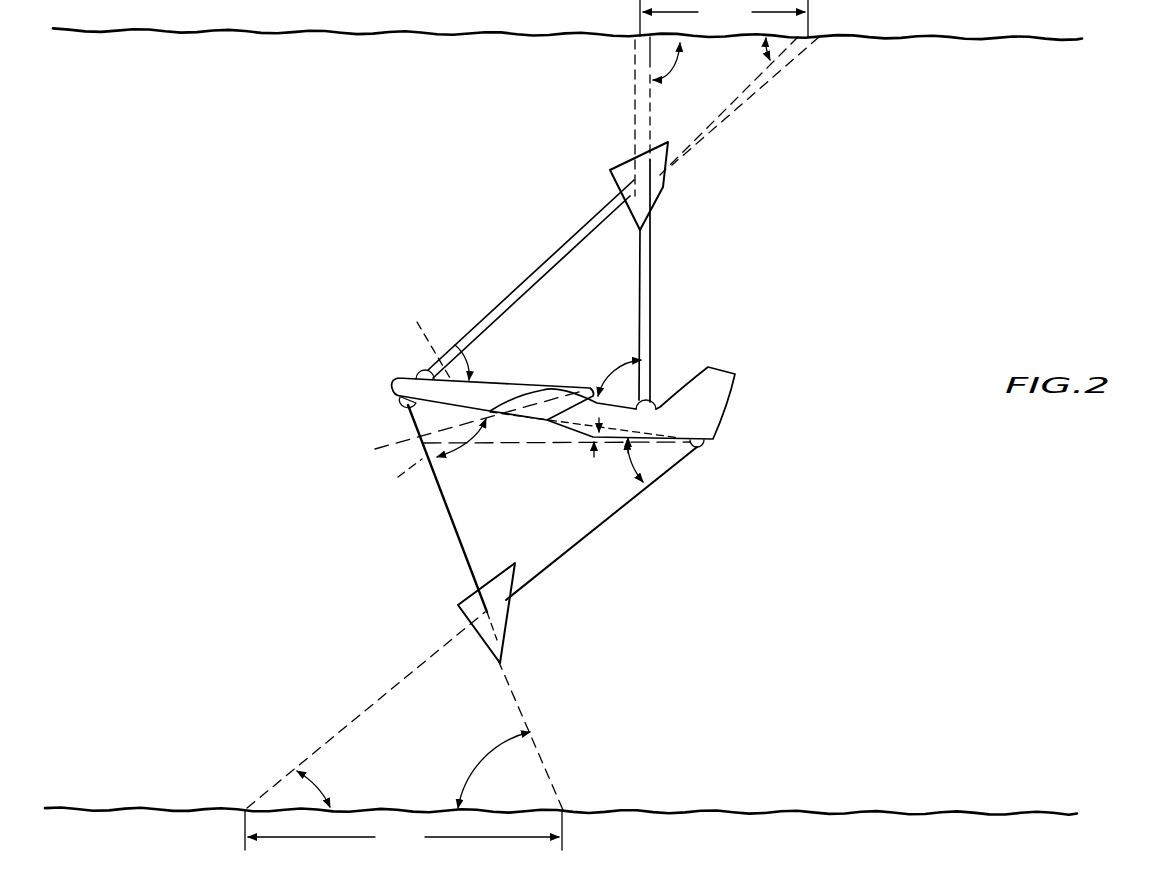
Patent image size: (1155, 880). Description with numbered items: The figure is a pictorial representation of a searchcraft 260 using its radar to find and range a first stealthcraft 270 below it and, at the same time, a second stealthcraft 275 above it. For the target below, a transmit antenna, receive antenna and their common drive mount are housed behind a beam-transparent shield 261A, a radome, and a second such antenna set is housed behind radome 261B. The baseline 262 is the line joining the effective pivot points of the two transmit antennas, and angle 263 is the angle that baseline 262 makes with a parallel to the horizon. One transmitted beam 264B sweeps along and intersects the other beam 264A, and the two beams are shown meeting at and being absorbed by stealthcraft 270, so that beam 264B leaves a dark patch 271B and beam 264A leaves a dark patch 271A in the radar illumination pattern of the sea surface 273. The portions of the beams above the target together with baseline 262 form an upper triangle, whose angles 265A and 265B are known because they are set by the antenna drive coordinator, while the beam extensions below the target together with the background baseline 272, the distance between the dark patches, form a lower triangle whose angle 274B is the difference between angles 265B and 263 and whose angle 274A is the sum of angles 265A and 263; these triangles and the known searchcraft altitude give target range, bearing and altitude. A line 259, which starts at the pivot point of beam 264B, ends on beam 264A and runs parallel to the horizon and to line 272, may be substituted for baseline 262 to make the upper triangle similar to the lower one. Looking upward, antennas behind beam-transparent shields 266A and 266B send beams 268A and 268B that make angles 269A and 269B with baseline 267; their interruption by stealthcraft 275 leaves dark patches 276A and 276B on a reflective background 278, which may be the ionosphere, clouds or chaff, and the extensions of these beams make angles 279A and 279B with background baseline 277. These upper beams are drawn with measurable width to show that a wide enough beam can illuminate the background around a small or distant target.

The line 259 is at (392, 479).
The searchcraft 260 is at (726, 389).
The beam-transparent shield 261A is at (400, 403).
The radome 261B is at (705, 447).
The baseline 262 is at (459, 427).
The angle 263 is at (560, 444).
The beam 264A is at (465, 558).
The beam 264B is at (606, 518).
The angle 265A is at (467, 440).
The angle 265B is at (625, 462).
The beam-transparent shield 266A is at (418, 370).
The beam-transparent shield 266B is at (655, 400).
The baseline 267 is at (415, 343).
The beam 268A is at (518, 300).
The beam 268B is at (651, 287).
The angle 269A is at (470, 358).
The angle 269B is at (604, 357).
The first stealthcraft 270 is at (503, 637).
The dark patch 271A is at (562, 808).
The dark patch 271B is at (247, 806).
The background baseline 272 is at (403, 831).
The sea surface 273 is at (949, 813).
The angle 274A is at (470, 780).
The angle 274B is at (325, 792).
The second stealthcraft 275 is at (657, 202).
The dark patch 276A is at (808, 38).
The dark patch 276B is at (637, 40).
The background baseline 277 is at (724, 18).
The reflective background 278 is at (339, 40).
The angle 279A is at (740, 53).
The angle 279B is at (676, 98).